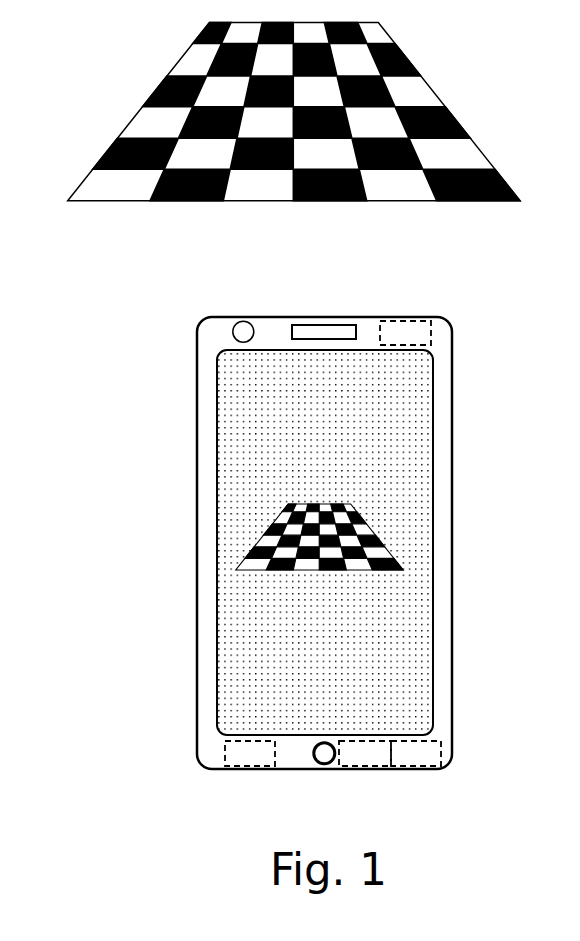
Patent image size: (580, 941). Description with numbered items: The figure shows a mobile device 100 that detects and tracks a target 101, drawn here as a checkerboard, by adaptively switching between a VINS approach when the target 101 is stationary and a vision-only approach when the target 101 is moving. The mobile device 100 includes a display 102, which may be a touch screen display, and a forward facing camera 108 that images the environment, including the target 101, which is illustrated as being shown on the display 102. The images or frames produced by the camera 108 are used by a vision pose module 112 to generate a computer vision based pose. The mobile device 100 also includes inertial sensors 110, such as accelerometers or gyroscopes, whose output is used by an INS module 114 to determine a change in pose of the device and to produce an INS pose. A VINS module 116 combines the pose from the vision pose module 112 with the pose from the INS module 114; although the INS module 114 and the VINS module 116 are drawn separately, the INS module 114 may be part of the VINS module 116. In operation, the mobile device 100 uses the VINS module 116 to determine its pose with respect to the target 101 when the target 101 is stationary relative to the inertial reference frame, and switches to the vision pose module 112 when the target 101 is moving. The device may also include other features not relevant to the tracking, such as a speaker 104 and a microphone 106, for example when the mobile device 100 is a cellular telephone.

The mobile device 100 is at (203, 275).
The target 101 is at (153, 93).
The display 102 is at (433, 488).
The speaker 104 is at (335, 324).
The microphone 106 is at (313, 747).
The forward facing camera 108 is at (233, 333).
The inertial sensors 110 is at (380, 326).
The vision pose module 112 is at (440, 758).
The INS module 114 is at (375, 768).
The VINS module 116 is at (225, 751).